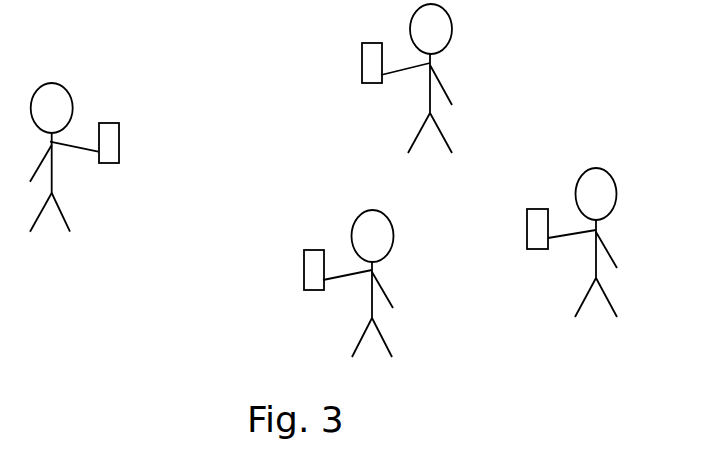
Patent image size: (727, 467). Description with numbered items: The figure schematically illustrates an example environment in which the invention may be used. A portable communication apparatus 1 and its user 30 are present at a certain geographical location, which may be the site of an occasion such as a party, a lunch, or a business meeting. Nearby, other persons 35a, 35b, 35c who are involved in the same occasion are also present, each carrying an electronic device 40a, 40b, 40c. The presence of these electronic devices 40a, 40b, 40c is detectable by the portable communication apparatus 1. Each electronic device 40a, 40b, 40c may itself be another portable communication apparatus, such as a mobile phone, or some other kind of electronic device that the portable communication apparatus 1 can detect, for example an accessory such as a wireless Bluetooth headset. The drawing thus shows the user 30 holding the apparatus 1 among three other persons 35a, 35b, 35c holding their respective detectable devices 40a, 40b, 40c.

The portable communication apparatus 1 is at (119, 133).
The user 30 is at (48, 104).
The other person 35a is at (430, 23).
The other person 35b is at (370, 230).
The other person 35c is at (595, 190).
The electronic device 40a is at (362, 50).
The electronic device 40b is at (304, 258).
The electronic device 40c is at (527, 218).